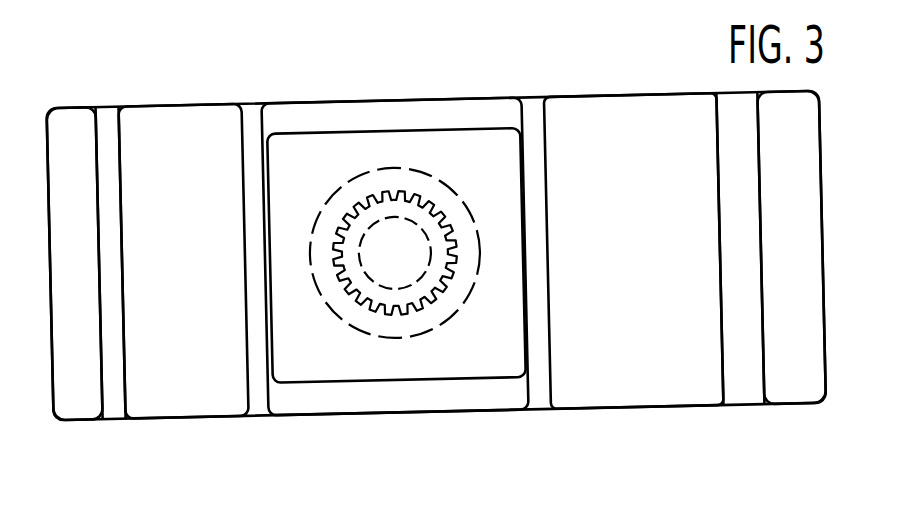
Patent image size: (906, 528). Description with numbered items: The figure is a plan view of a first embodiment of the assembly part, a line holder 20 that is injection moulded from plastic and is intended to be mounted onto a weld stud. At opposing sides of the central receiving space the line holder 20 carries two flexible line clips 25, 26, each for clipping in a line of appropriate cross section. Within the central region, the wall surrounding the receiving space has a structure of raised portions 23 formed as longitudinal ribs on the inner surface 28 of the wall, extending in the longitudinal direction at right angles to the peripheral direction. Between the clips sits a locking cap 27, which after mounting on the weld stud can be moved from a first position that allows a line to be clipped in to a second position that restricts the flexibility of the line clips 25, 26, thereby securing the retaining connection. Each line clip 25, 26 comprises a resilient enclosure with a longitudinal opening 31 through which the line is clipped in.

The line holder 20 is at (367, 98).
The raised portions 23 is at (372, 308).
The line clip 25 is at (181, 398).
The line clip 26 is at (645, 110).
The locking cap 27 is at (480, 363).
The inner surface 28 is at (432, 210).
The longitudinal opening 31 is at (108, 108).